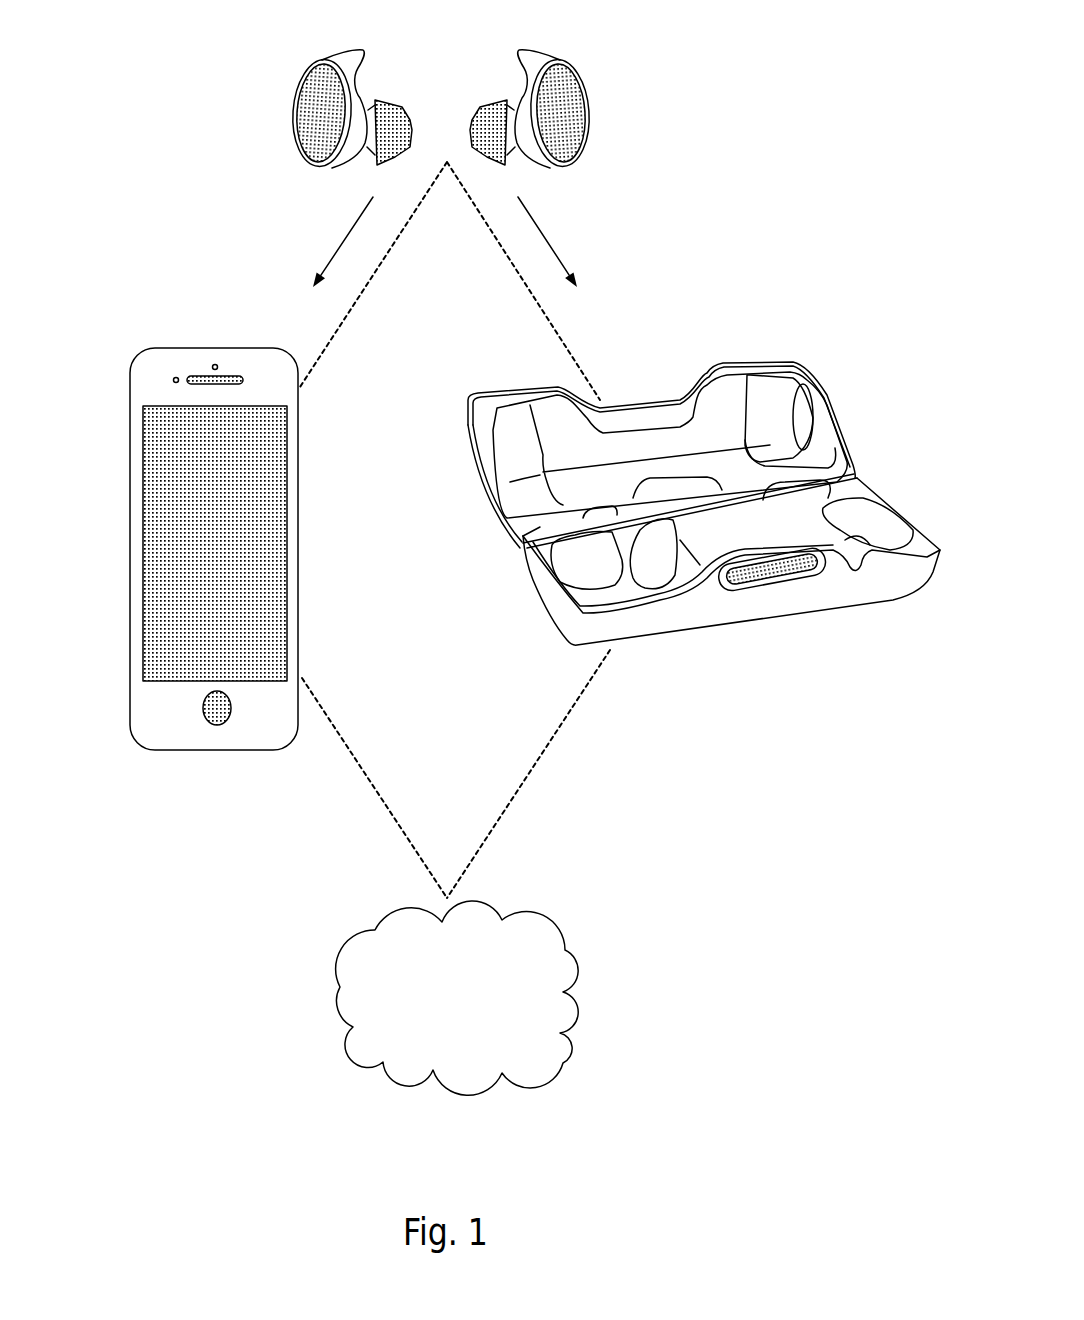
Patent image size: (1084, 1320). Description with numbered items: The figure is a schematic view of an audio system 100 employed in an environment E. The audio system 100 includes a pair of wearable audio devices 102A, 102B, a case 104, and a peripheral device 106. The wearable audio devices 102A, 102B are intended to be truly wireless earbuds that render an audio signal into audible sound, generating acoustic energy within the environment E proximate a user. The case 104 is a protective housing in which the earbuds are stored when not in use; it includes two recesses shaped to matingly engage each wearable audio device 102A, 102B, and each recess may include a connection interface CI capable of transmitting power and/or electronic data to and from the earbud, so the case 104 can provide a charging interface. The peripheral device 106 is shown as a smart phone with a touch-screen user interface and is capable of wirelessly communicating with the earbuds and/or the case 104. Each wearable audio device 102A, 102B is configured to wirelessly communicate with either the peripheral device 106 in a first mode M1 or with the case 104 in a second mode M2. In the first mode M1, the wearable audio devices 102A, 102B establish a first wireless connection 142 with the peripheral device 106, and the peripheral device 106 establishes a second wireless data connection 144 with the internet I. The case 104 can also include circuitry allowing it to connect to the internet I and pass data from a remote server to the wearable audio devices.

The audio system 100 is at (699, 110).
The wearable audio device 102A is at (308, 62).
The wearable audio device 102B is at (574, 62).
The case 104 is at (733, 364).
The peripheral device 106 is at (157, 348).
The first wireless connection 142 is at (363, 288).
The second wireless data connection 144 is at (532, 773).
The first mode M1 is at (334, 260).
The second mode M2 is at (559, 260).
The environment E is at (75, 252).
The connection interface CI is at (852, 538).
The internet I is at (505, 1011).